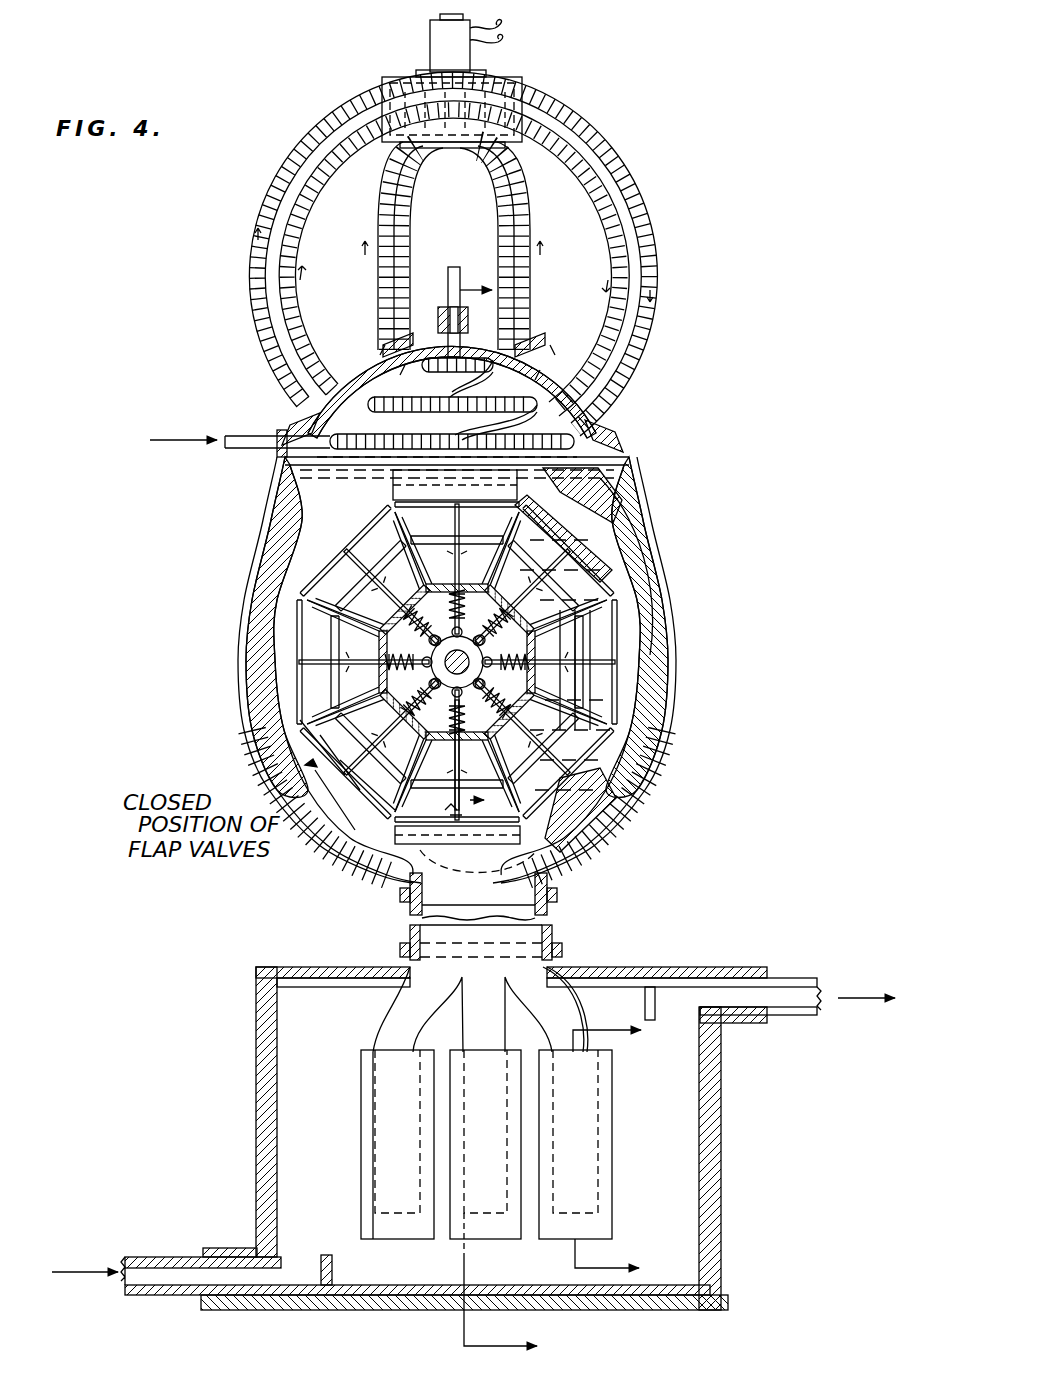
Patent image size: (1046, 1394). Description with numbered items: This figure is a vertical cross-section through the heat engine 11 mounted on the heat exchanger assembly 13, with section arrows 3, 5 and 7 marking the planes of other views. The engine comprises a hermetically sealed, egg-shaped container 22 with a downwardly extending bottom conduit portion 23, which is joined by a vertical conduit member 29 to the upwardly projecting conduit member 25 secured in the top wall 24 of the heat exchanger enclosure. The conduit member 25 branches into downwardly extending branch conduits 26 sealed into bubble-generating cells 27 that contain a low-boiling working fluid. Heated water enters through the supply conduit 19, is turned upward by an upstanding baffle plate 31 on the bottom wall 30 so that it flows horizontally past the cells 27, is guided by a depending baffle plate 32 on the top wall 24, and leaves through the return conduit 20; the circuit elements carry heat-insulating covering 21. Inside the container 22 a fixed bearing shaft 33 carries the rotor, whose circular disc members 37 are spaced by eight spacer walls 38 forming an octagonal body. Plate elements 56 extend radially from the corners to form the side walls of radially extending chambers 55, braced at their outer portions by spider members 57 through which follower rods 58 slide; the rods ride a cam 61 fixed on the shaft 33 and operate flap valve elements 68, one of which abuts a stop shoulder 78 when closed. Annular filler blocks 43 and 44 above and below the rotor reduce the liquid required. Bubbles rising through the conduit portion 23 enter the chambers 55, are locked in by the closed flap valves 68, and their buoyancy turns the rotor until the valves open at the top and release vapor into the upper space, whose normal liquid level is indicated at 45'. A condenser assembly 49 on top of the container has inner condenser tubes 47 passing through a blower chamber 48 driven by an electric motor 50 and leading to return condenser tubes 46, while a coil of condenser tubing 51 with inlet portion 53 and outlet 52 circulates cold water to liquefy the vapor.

The electric motor 50 is at (440, 46).
The blower chamber 48 is at (522, 80).
The condenser assembly 49 is at (574, 112).
The return condenser tubes 46 is at (626, 166).
The inner condenser tubes 47 is at (520, 233).
The outlet end of condenser tubing 52 is at (458, 269).
The section line 3 is at (480, 816).
The condenser tubing coil 51 is at (605, 420).
The normal liquid level 45' is at (509, 401).
The hermetically sealed container 22 is at (600, 450).
The heat engine 11 is at (686, 468).
The inlet portion of condenser tubing 53 is at (282, 448).
The annular filler block 43 is at (290, 502).
The radially extending chambers 55 is at (655, 562).
The flap valve elements 68 is at (617, 522).
The circular disc members 37 is at (267, 691).
The annular filler block 44 is at (345, 840).
The spacer walls 38 is at (440, 581).
The follower rods 58 is at (352, 676).
The spider members 57 is at (469, 504).
The lower piston 5 is at (457, 765).
The bearing shaft 33 is at (461, 704).
The cam 61 is at (493, 682).
The plate elements 56 is at (568, 660).
The stop shoulder 78 is at (386, 775).
The bottom conduit portion 23 is at (548, 882).
The vertical conduit member 29 is at (550, 928).
The upwardly projecting conduit member 25 is at (555, 946).
The heat-insulating covering 21 is at (625, 968).
The return conduit 20 is at (810, 978).
The top wall 24 is at (578, 980).
The depending baffle plate 32 is at (650, 1022).
The flow arrow 7 is at (596, 1146).
The heat exchanger assembly 13 is at (702, 1132).
The branch conduits 26 is at (370, 1104).
The bubble-generating cells 27 is at (362, 1178).
The supply conduit 19 is at (160, 1266).
The bottom wall 30 is at (399, 1285).
The upstanding baffle plate 31 is at (333, 1277).